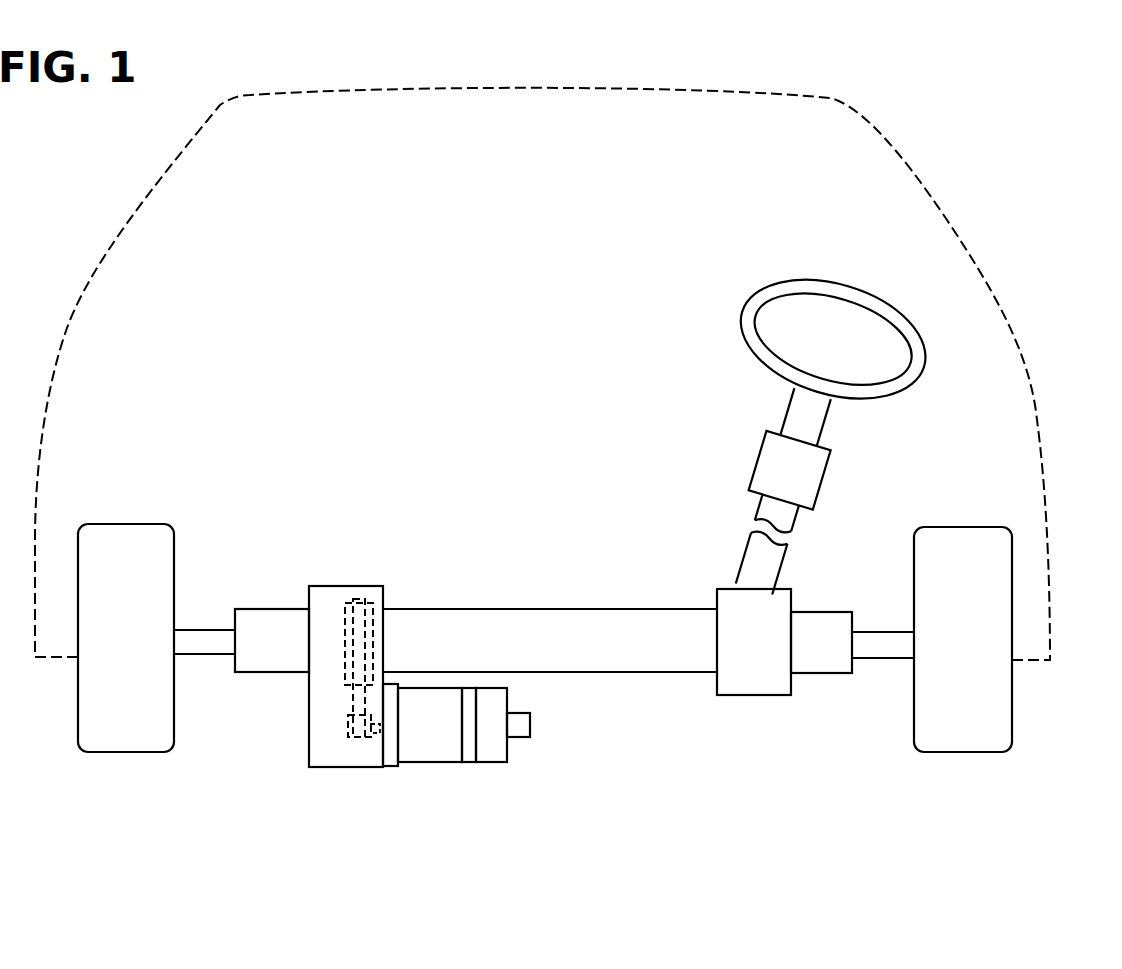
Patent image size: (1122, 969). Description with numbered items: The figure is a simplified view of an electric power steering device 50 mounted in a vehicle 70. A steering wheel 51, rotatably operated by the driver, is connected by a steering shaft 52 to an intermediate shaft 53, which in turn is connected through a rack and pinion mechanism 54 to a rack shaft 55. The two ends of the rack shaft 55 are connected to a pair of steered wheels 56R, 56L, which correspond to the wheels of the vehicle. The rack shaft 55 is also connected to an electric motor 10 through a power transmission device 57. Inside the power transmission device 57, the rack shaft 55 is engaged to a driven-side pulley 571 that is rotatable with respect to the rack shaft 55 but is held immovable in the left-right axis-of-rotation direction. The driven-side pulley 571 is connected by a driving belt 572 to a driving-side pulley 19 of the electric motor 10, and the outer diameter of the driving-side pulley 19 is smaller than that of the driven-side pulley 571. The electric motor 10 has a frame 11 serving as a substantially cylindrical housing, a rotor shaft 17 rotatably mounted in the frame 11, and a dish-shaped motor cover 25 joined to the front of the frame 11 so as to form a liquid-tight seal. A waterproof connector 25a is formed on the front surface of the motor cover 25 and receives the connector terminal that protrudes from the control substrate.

The vehicle 70 is at (146, 183).
The electric power steering device 50 is at (492, 408).
The steering wheel 51 is at (747, 297).
The steering shaft 52 is at (785, 415).
The intermediate shaft 53 is at (740, 562).
The rack and pinion mechanism 54 is at (773, 695).
The rack shaft 55 is at (528, 612).
The steered wheel 56L is at (128, 524).
The steered wheel 56R is at (963, 533).
The power transmission device 57 is at (349, 586).
The driven-side pulley 571 is at (380, 606).
The driving belt 572 is at (345, 640).
The electric motor 10 is at (423, 752).
The frame 11 is at (468, 755).
The rotor shaft 17 is at (353, 762).
The driving-side pulley 19 is at (350, 764).
The motor cover 25 is at (498, 755).
The waterproof connector 25a is at (531, 718).